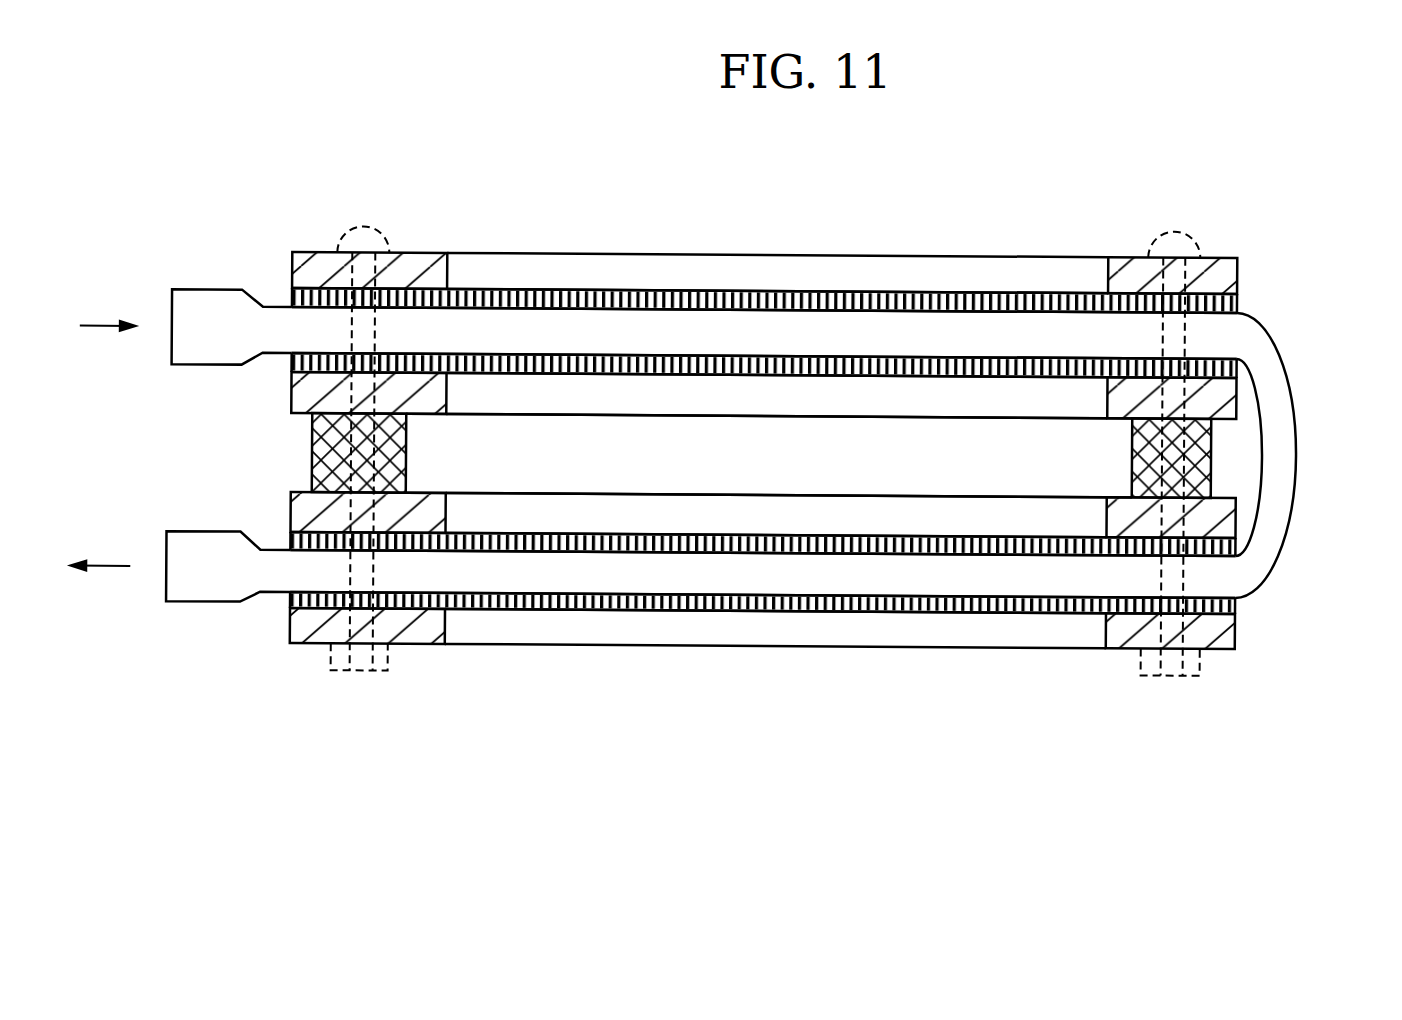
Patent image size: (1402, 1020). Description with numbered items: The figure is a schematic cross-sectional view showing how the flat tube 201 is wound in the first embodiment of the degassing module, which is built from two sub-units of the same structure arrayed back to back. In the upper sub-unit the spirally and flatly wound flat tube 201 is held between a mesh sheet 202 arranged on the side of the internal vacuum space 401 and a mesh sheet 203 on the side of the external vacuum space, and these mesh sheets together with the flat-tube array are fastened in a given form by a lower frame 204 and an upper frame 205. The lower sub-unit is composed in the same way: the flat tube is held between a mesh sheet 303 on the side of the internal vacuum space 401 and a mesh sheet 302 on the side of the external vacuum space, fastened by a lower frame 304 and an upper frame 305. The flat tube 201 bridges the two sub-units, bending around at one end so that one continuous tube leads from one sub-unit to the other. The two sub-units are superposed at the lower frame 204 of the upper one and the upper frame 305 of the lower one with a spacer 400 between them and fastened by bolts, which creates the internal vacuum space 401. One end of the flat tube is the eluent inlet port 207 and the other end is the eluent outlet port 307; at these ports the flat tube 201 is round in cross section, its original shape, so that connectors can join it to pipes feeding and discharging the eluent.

The flat tube 201 is at (988, 338).
The mesh sheet 202 is at (642, 360).
The mesh sheet 203 is at (820, 297).
The lower frame 204 is at (1222, 402).
The upper frame 205 is at (1242, 268).
The eluent inlet port 207 is at (212, 290).
The mesh sheet 302 is at (677, 610).
The mesh sheet 303 is at (543, 550).
The lower frame 304 is at (1007, 632).
The upper frame 305 is at (1223, 522).
The eluent outlet port 307 is at (207, 605).
The spacer 400 is at (313, 457).
The internal vacuum space 401 is at (838, 472).